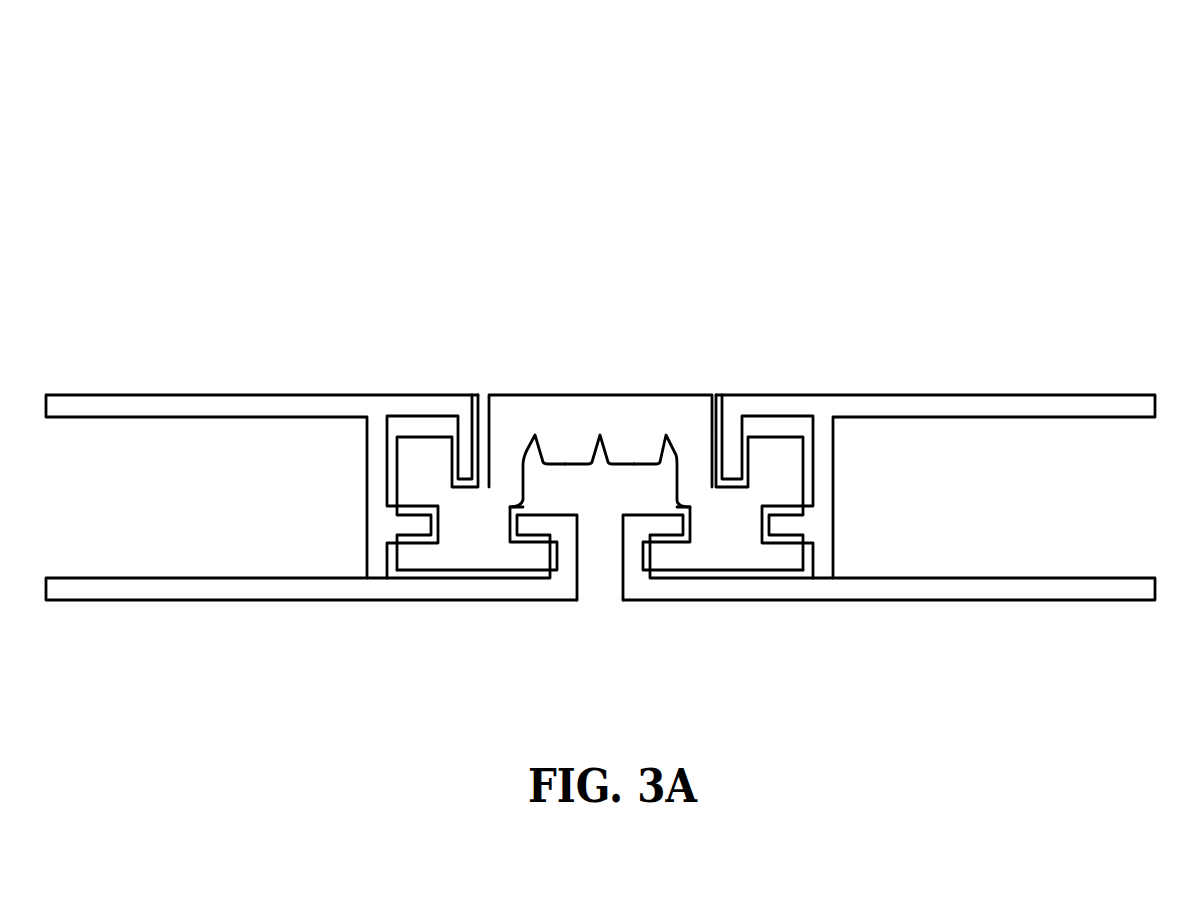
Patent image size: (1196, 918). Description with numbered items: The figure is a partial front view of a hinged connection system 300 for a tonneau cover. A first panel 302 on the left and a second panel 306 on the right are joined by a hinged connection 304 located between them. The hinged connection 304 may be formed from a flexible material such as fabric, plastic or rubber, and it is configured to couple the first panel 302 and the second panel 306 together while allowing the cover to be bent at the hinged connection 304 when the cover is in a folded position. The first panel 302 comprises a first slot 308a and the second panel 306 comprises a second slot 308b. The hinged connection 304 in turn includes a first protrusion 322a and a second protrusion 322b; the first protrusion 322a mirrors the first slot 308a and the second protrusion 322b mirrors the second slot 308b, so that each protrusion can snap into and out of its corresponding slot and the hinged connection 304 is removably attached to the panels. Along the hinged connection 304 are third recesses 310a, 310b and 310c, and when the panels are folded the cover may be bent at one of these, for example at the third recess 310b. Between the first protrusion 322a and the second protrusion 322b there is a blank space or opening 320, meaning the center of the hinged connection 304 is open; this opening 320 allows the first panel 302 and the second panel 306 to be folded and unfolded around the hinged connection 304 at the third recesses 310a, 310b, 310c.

The hinged connection system 300 is at (303, 170).
The first panel 302 is at (148, 400).
The hinged connection 304 is at (508, 428).
The second panel 306 is at (1005, 408).
The first slot 308a is at (428, 430).
The second slot 308b is at (798, 425).
The third recess 310a is at (541, 453).
The third recess 310b is at (608, 452).
The third recess 310c is at (672, 450).
The opening 320 is at (600, 508).
The first protrusion 322a is at (463, 548).
The second protrusion 322b is at (732, 540).